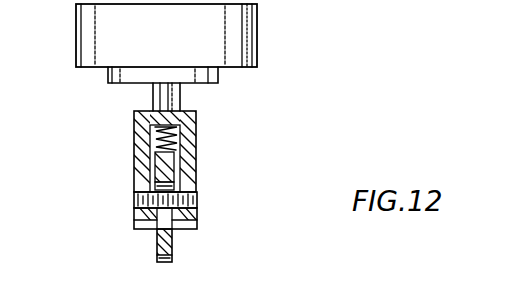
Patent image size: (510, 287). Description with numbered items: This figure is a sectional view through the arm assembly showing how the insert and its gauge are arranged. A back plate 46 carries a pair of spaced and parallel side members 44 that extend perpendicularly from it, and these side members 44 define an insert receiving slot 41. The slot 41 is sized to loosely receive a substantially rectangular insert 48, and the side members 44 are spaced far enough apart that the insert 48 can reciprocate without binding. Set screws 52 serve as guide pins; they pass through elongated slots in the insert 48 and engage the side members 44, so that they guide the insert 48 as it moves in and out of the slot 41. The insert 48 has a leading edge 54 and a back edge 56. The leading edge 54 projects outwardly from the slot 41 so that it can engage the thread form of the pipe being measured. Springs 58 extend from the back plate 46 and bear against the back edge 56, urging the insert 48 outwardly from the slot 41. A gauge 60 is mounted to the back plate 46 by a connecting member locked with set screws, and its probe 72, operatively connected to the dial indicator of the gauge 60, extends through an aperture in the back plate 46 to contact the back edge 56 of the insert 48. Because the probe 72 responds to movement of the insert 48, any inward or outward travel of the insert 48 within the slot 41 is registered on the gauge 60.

The gauge 60 is at (257, 48).
The probe 72 is at (181, 100).
The back plate 46 is at (153, 112).
The side members 44 is at (188, 144).
The insert receiving slot 41 is at (180, 173).
The springs 58 is at (152, 135).
The back edge 56 is at (157, 165).
The set screws 52 is at (197, 201).
The insert 48 is at (173, 248).
The leading edge 54 is at (158, 257).